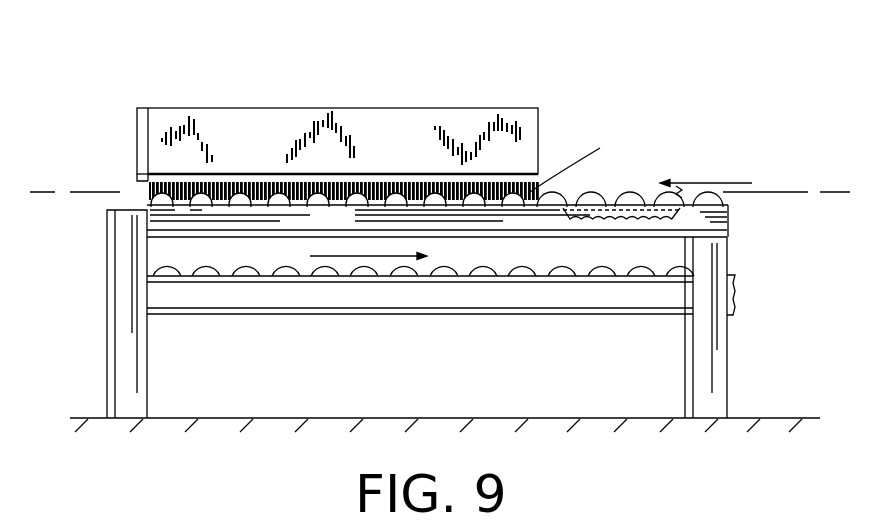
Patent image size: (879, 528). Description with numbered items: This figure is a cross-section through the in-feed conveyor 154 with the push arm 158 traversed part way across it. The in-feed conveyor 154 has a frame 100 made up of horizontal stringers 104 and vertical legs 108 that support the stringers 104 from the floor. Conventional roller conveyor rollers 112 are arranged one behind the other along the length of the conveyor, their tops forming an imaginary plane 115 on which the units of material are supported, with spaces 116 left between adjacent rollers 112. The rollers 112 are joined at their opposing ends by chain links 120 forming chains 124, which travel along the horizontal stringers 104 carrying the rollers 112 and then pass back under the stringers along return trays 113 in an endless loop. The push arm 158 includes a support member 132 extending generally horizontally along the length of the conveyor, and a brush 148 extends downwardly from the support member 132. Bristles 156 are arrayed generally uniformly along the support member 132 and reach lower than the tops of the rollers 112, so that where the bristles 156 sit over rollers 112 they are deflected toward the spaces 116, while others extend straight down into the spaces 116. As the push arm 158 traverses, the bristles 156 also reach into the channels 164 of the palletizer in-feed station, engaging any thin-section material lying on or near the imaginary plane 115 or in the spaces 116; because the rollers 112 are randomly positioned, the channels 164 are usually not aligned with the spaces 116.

The frame 100 is at (683, 343).
The horizontal stringers 104 is at (517, 238).
The vertical legs 108 is at (727, 355).
The roller conveyor rollers 112 is at (633, 193).
The return trays 113 is at (363, 318).
The imaginary plane 115 is at (770, 192).
The spaces 116 is at (570, 202).
The chain links 120 is at (648, 200).
The chains 124 is at (672, 187).
The support member 132 is at (397, 108).
The brush 148 is at (147, 191).
The in-feed conveyor 154 is at (563, 165).
The bristles 156 is at (247, 188).
The push arm 158 is at (283, 107).
The channels 164 is at (377, 188).